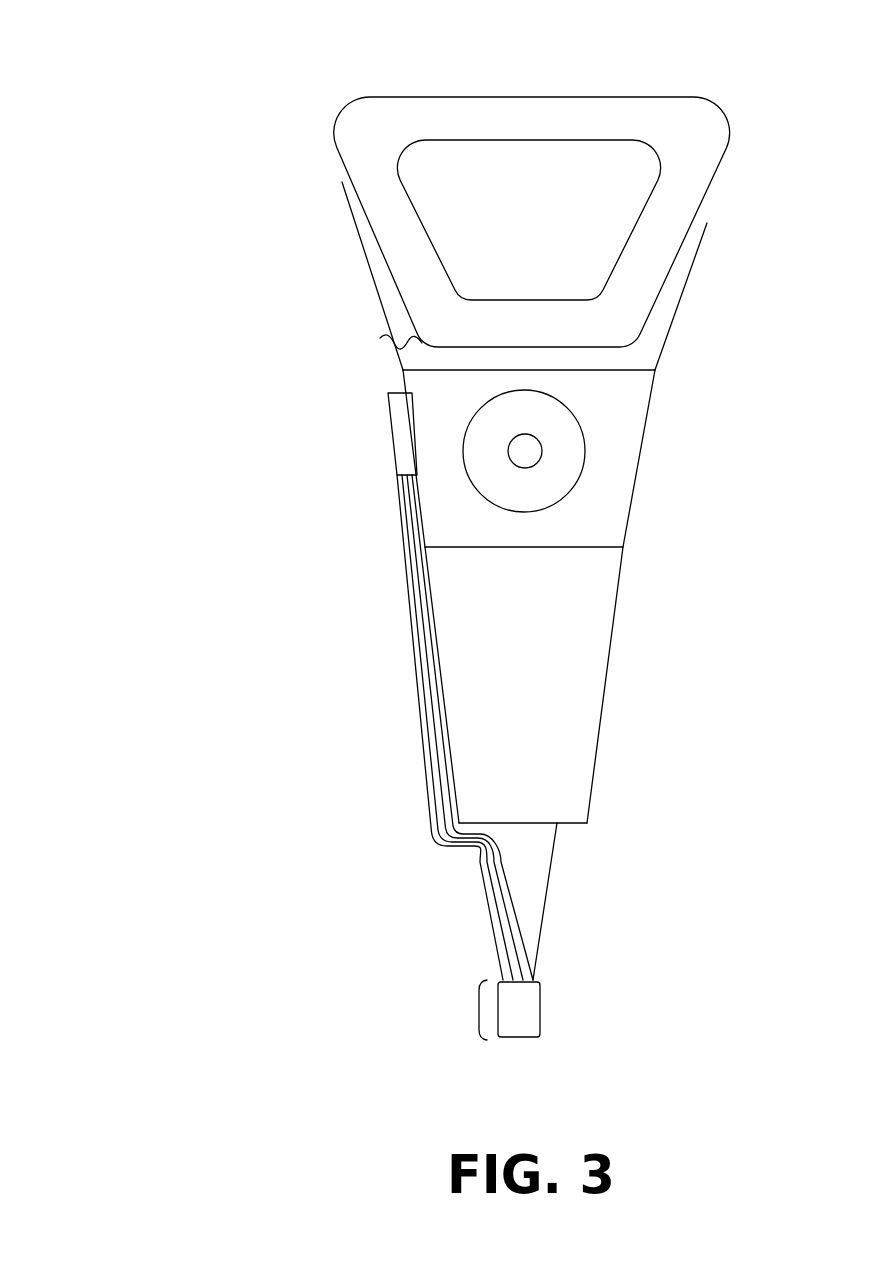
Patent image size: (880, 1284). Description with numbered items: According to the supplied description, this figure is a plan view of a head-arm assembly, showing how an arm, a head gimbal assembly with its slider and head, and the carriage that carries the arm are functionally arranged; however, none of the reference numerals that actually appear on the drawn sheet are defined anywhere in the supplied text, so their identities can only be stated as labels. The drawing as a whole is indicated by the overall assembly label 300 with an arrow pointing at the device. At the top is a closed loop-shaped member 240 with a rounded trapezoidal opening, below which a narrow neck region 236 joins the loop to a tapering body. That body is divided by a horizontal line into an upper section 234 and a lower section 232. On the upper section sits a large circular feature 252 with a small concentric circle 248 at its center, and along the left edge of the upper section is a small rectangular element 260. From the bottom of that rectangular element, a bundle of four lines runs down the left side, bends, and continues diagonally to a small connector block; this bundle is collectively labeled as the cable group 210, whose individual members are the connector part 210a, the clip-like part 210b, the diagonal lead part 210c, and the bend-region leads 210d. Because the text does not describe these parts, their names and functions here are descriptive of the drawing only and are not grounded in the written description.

The hand-held controller assembly 300 is at (104, 73).
The loop / ring portion 240 is at (402, 245).
The neck region between ring and handle 236 is at (402, 315).
The upper handle body section 234 is at (593, 510).
The lower handle body section 232 is at (522, 638).
The circular button base 252 is at (567, 463).
The button 248 is at (525, 450).
The side switch / sensor 260 is at (403, 442).
The cable assembly 210 is at (278, 777).
The connector 210a is at (505, 1027).
The strain relief / clamp 210b is at (477, 1008).
The cable segment 210c is at (492, 905).
The wires 210d is at (518, 865).